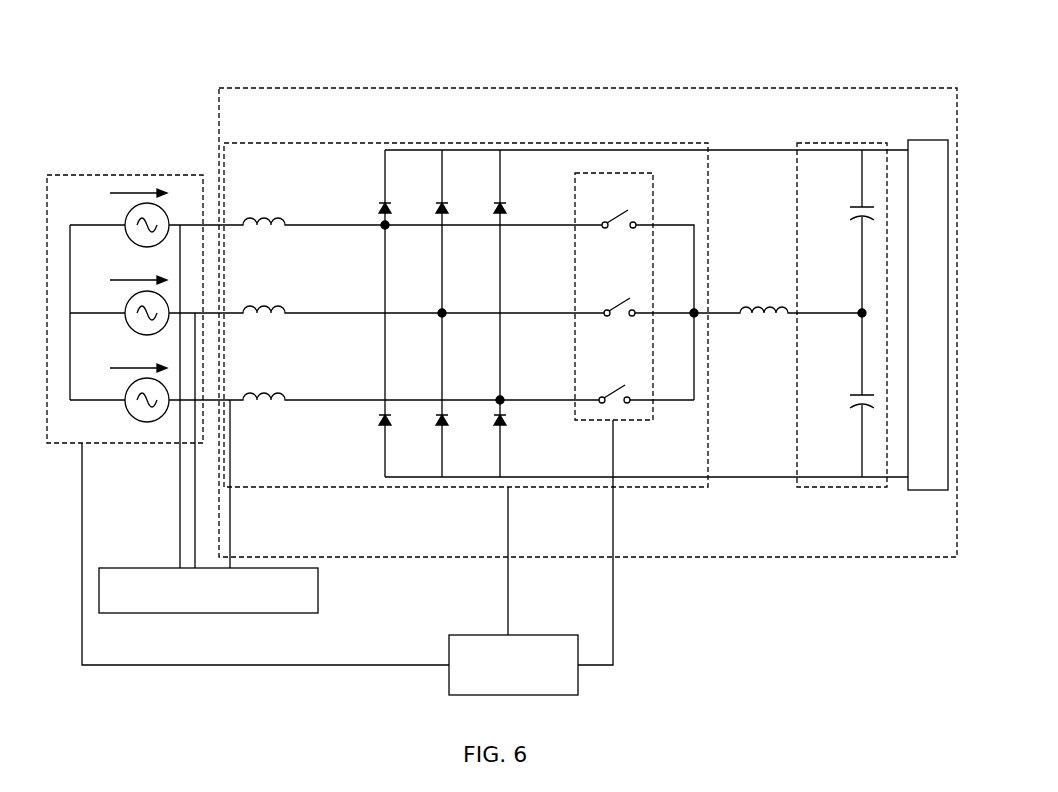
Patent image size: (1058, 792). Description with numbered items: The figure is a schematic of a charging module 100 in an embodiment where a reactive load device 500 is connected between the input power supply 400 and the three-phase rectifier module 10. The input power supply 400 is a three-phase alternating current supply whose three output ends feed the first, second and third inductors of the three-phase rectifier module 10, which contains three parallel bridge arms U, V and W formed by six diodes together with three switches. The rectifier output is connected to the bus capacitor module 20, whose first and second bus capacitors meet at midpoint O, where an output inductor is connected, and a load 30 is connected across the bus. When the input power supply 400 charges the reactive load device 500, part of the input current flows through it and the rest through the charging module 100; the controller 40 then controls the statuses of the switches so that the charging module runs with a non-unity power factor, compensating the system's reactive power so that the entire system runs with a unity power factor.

The charging module 100 is at (345, 88).
The input power supply 400 is at (100, 175).
The reactive load device 500 is at (152, 568).
The three-phase rectifier module 10 is at (668, 487).
The bus capacitor module 20 is at (835, 487).
The load 30 is at (920, 490).
The controller 40 is at (447, 645).